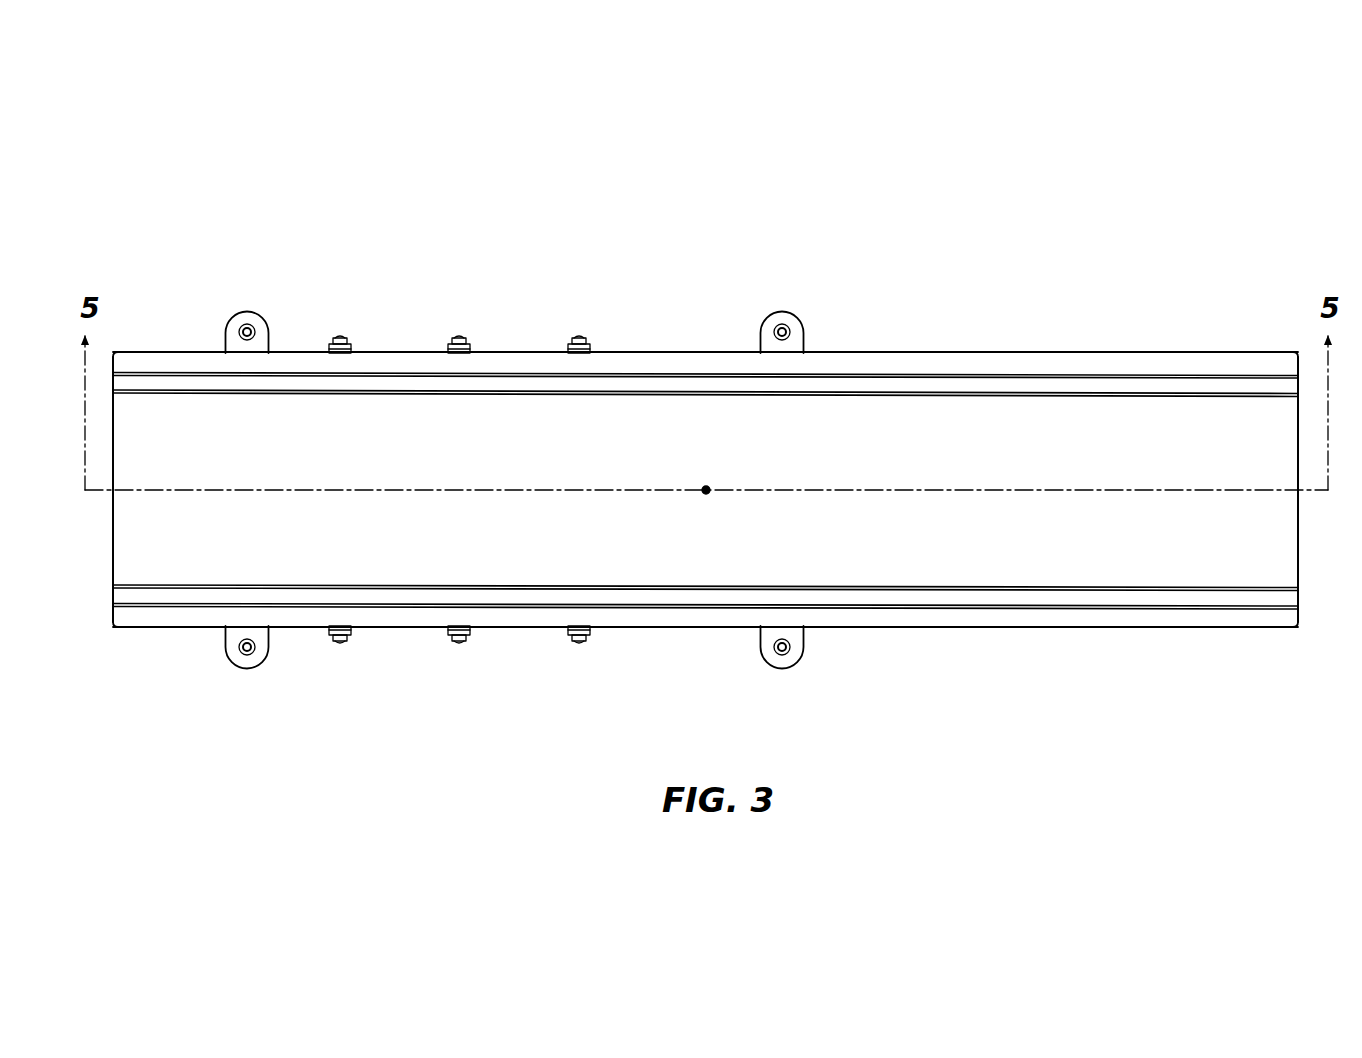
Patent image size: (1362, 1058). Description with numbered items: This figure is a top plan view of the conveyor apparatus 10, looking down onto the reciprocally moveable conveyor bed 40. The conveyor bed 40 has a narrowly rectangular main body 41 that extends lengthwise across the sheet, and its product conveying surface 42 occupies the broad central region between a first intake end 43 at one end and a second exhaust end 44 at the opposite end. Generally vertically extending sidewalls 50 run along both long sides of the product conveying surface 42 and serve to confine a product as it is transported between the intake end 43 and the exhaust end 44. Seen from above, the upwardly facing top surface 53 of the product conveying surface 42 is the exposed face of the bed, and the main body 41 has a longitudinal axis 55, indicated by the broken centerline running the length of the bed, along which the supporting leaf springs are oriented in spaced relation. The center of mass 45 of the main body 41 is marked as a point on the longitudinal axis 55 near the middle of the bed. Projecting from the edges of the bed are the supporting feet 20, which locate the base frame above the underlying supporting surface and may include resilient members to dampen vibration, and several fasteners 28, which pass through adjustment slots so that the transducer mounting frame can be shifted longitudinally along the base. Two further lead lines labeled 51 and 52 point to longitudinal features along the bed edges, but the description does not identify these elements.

The conveyor apparatus 10 is at (1198, 176).
The supporting feet 20 is at (247, 313).
The fasteners 28 is at (340, 336).
The reciprocally moveable conveyor bed 40 is at (972, 352).
The main body 41 is at (873, 418).
The product conveying surface 42 is at (826, 428).
The first intake end 43 is at (142, 415).
The second exhaust end 44 is at (1270, 553).
The center of mass 45 is at (706, 486).
The vertically extending sidewalls 50 is at (1096, 352).
The upper groove 51 is at (640, 382).
The lower groove 52 is at (1003, 607).
The upwardly facing top surface 53 is at (705, 489).
The longitudinal axis 55 is at (140, 493).